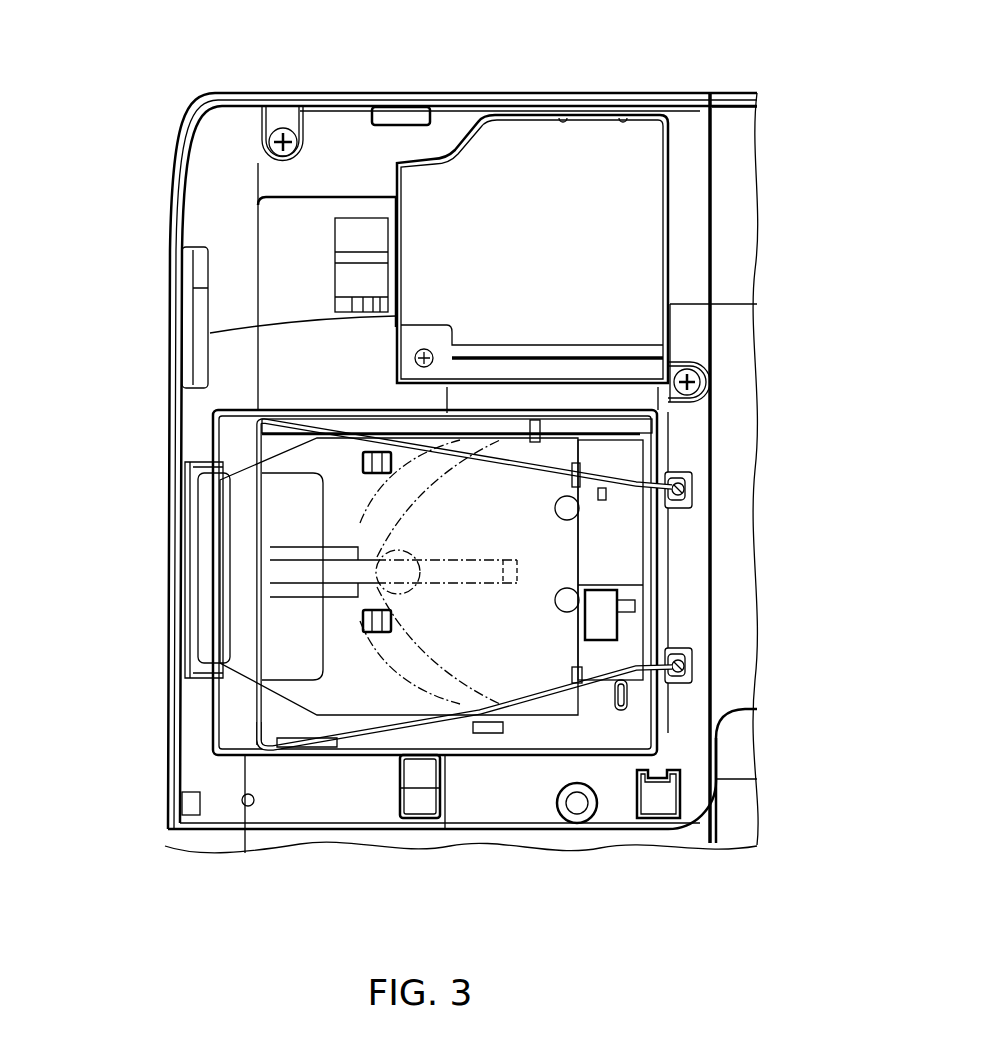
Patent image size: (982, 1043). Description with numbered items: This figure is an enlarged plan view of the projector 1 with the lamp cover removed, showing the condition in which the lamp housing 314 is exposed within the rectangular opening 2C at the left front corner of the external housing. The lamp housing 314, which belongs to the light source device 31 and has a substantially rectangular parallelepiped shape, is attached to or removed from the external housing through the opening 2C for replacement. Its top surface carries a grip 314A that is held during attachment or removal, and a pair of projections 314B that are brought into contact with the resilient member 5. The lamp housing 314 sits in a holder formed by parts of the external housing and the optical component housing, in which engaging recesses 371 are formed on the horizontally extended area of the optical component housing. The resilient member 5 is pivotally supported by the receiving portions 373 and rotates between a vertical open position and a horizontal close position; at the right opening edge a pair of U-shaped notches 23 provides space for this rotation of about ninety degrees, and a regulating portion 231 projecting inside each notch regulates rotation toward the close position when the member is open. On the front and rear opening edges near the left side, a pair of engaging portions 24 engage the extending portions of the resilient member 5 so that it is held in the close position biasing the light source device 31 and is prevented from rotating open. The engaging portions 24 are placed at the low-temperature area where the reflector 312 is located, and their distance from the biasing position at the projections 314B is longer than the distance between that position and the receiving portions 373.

The projector 1 is at (552, 63).
The opening 2C is at (527, 740).
The notches 23 is at (673, 511).
The regulating portion 231 is at (673, 478).
The engaging portions 24 is at (310, 438).
The light source device 31 is at (288, 632).
The lamp housing 314 is at (146, 570).
The grip 314A is at (237, 507).
The projections 314B is at (573, 481).
The reflector 312 is at (453, 490).
The engaging recesses 371 is at (600, 497).
The receiving portion 373 is at (690, 488).
The resilient member 5 is at (455, 705).